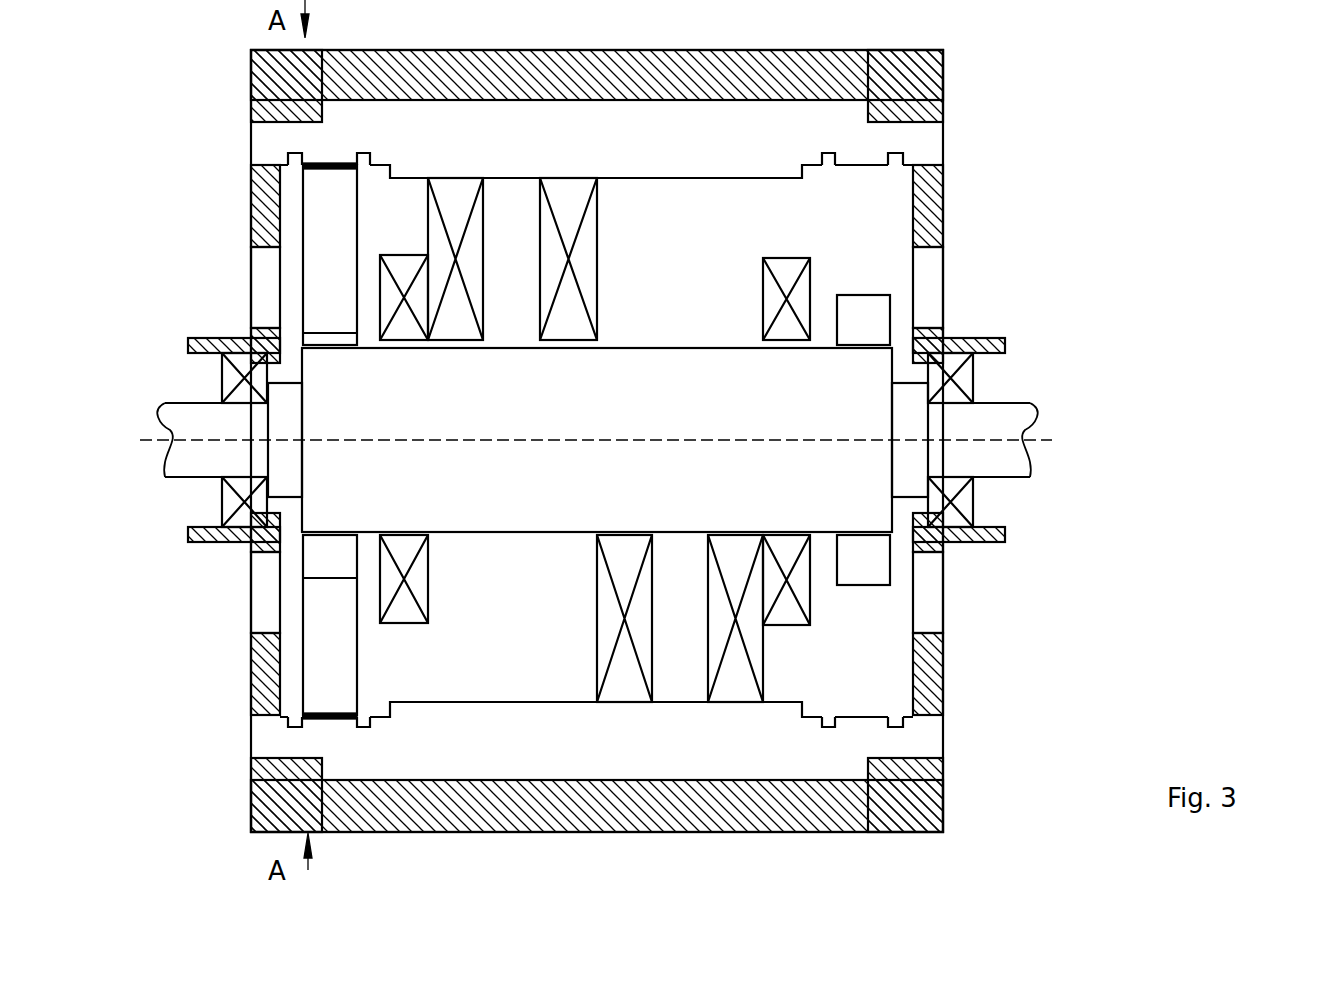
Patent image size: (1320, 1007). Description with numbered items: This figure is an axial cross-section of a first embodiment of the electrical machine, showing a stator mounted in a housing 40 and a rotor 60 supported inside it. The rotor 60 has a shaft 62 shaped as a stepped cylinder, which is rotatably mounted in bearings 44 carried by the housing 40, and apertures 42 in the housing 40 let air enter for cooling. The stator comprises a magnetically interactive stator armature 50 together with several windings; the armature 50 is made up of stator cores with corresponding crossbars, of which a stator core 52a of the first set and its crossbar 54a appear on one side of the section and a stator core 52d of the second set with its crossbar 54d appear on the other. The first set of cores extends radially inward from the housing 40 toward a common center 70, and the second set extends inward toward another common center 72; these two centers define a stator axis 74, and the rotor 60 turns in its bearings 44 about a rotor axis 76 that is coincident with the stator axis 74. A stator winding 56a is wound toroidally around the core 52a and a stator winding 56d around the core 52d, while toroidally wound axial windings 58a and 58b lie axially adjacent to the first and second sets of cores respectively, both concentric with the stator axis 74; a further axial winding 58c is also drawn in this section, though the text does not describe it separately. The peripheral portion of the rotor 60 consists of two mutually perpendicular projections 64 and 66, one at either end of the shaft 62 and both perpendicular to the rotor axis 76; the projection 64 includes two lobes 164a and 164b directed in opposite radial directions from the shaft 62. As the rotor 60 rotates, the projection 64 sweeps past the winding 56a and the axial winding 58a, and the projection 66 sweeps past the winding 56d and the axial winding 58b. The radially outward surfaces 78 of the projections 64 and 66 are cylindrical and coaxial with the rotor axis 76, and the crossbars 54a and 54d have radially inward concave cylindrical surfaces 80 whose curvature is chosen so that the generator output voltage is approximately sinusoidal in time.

The housing 40 is at (946, 98).
The apertures 42 is at (265, 275).
The bearings 44 is at (230, 373).
The stator armature 50 is at (624, 182).
The stator core 52a is at (492, 276).
The stator core 52d is at (655, 638).
The crossbar 54a is at (596, 147).
The crossbar 54d is at (596, 731).
The stator winding 56a is at (458, 186).
The stator winding 56d is at (600, 595).
The axial winding 58a is at (395, 268).
The axial winding 58b is at (770, 270).
The coil 58c is at (410, 628).
The rotor 60 is at (1088, 441).
The shaft 62 is at (584, 411).
The projection 64 is at (314, 275).
The projection 66 is at (849, 333).
The common center 70 is at (460, 440).
The common center 72 is at (683, 440).
The stator axis 74 is at (340, 440).
The rotor axis 76 is at (340, 440).
The radially outward surfaces 78 is at (327, 712).
The concave cylindrical surfaces 80 is at (328, 200).
The lobe 164a is at (330, 321).
The lobe 164b is at (330, 562).